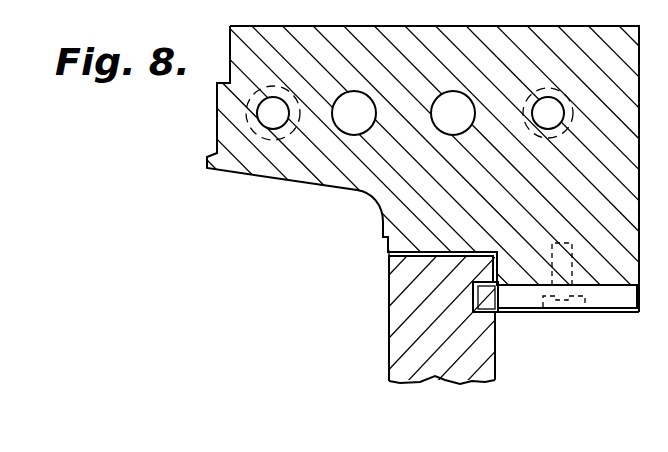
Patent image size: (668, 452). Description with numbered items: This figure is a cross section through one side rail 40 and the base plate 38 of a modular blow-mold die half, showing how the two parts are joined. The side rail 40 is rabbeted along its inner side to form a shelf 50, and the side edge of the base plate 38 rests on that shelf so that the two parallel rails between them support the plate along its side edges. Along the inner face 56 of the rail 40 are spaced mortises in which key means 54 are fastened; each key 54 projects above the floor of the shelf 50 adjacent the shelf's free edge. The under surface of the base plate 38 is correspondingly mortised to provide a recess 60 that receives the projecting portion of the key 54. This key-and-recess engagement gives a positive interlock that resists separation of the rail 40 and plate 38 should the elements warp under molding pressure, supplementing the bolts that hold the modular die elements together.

The side rail 40 is at (272, 180).
The base plate 38 is at (400, 309).
The shelf 50 is at (533, 288).
The key means 54 is at (621, 297).
The inner face 56 is at (598, 313).
The recess 60 is at (483, 312).